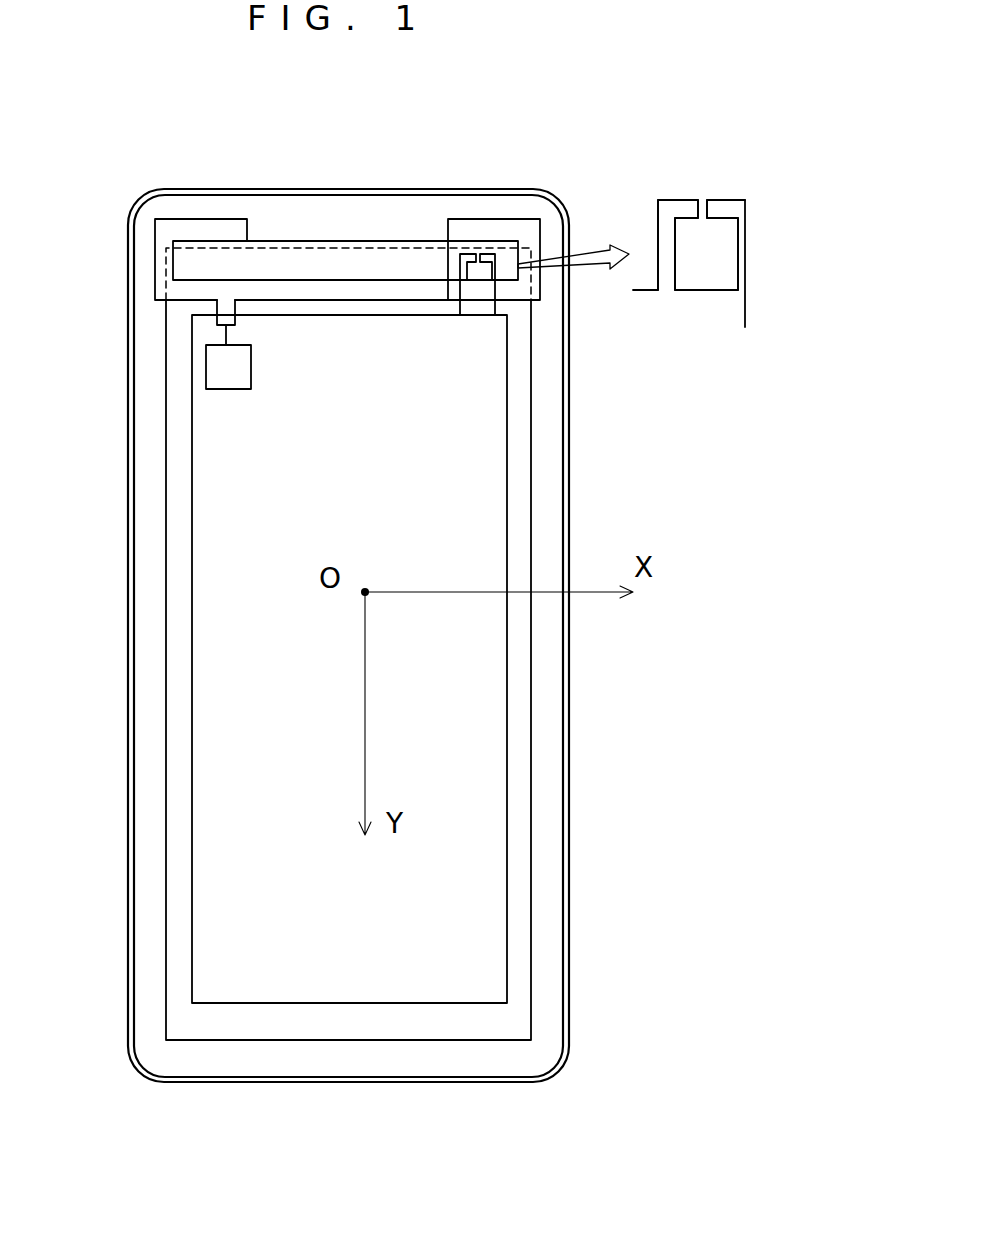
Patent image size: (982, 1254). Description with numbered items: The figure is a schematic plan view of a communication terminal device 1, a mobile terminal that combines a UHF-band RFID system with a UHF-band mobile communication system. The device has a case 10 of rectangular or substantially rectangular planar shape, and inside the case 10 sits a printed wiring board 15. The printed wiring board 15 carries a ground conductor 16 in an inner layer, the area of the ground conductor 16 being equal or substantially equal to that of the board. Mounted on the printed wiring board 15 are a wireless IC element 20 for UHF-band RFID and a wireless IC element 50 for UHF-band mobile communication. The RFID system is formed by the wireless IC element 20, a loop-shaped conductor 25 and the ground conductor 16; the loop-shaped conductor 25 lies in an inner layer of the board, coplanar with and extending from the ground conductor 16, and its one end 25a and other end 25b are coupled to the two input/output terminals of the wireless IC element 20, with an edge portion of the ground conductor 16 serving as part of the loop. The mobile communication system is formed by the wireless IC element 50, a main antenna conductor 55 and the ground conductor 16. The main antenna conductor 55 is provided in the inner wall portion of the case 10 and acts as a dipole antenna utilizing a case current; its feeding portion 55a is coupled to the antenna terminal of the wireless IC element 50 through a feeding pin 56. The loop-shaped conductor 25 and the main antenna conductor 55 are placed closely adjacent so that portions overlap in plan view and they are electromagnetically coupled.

The communication terminal device 1 is at (217, 135).
The case 10 is at (568, 398).
The printed wiring board 15 is at (530, 453).
The ground conductor 16 is at (485, 497).
The wireless IC element for UHF-band RFID 20 is at (472, 219).
The loop-shaped conductor 25 is at (460, 264).
The one end of the loop-shaped conductor 25a is at (690, 208).
The other end of the loop-shaped conductor 25b is at (716, 200).
The wireless IC element for UHF-band mobile communication 50 is at (225, 390).
The main antenna conductor 55 is at (387, 292).
The feeding portion 55a is at (235, 307).
The feeding pin 56 is at (227, 335).